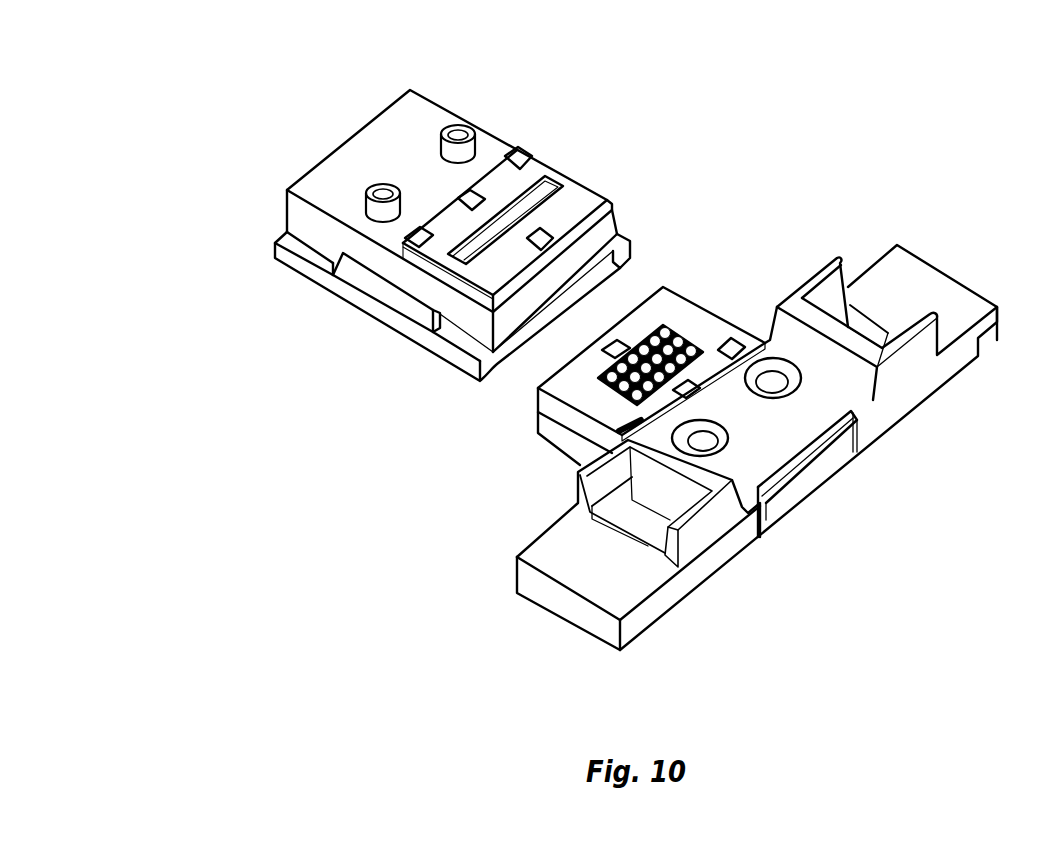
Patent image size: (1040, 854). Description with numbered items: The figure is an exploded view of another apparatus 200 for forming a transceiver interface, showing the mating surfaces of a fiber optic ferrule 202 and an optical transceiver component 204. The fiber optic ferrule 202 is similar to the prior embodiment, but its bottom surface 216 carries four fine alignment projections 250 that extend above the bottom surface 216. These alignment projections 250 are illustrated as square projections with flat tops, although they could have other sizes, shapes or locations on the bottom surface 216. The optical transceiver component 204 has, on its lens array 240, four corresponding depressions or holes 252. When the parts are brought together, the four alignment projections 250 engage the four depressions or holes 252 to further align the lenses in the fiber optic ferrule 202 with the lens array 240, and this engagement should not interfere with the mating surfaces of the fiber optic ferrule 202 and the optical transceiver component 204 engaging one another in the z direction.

The apparatus for forming a transceiver interface 200 is at (764, 117).
The fiber optic ferrule 202 is at (444, 96).
The optical transceiver component 204 is at (870, 228).
The bottom surface 216 is at (308, 188).
The lens array 240 is at (558, 412).
The fine alignment projections 250 is at (519, 151).
The depressions or holes 252 is at (731, 350).